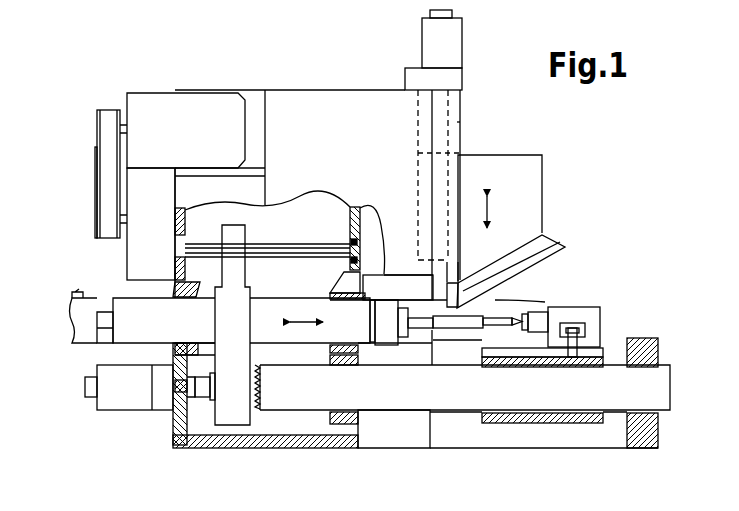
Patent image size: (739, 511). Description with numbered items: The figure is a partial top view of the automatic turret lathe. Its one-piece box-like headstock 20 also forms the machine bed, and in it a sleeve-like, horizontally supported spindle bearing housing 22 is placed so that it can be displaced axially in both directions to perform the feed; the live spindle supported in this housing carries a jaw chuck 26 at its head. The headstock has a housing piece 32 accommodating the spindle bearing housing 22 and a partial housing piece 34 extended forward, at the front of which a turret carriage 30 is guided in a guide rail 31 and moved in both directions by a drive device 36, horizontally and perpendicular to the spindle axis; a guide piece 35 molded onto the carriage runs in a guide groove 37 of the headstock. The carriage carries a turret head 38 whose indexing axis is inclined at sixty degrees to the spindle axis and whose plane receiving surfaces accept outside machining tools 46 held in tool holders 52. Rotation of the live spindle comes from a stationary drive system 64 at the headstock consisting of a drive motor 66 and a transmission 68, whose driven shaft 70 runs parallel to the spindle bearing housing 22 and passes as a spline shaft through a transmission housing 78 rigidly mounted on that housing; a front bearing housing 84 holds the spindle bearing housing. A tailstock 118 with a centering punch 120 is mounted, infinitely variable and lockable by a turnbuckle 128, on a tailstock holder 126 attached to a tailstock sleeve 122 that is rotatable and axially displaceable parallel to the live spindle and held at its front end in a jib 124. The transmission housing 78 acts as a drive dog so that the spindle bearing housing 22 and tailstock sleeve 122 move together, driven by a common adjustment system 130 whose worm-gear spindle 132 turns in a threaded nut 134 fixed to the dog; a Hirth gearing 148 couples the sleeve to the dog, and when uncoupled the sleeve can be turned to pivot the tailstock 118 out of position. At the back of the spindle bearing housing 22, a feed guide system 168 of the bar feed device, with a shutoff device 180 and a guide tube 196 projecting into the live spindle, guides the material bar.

The headstock 20 is at (295, 86).
The spindle bearing housing 22 is at (282, 294).
The chuck 26 is at (393, 292).
The turret carriage 30 is at (549, 172).
The guide rail 31 is at (457, 122).
The housing piece 32 is at (341, 287).
The partial housing piece 34 is at (403, 117).
The guide piece 35 is at (418, 170).
The drive device 36 is at (452, 42).
The guide groove 37 is at (420, 135).
The turret head 38 is at (568, 241).
The outside machining tool 46 is at (460, 329).
The tool holder 52 is at (446, 298).
The drive system 64 is at (90, 108).
The drive motor 66 is at (167, 145).
The transmission 68 is at (160, 237).
The driven shaft 70 is at (289, 254).
The transmission housing 78 is at (222, 315).
The front bearing housing 84 is at (360, 350).
The tailstock 118 is at (581, 305).
The centering punch 120 is at (518, 300).
The tailstock sleeve 122 is at (449, 418).
The jib 124 is at (646, 346).
The tailstock holder 126 is at (535, 425).
The turnbuckle 128 is at (588, 345).
The adjustment system 130 is at (140, 412).
The worm-gear spindle 132 is at (190, 398).
The threaded nut 134 is at (204, 398).
The Hirth gearing 148 is at (269, 390).
The feed guide system 168 is at (79, 348).
The shutoff device 180 is at (82, 292).
The guide tube 196 is at (106, 330).